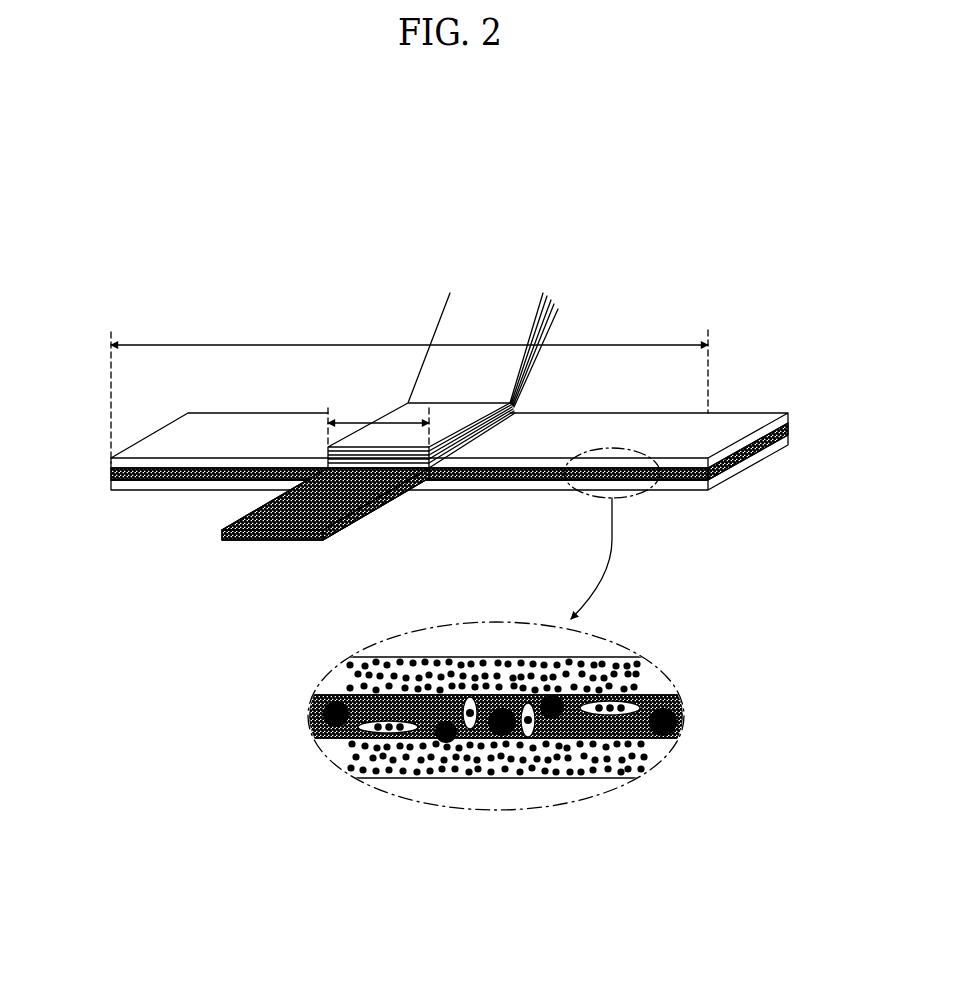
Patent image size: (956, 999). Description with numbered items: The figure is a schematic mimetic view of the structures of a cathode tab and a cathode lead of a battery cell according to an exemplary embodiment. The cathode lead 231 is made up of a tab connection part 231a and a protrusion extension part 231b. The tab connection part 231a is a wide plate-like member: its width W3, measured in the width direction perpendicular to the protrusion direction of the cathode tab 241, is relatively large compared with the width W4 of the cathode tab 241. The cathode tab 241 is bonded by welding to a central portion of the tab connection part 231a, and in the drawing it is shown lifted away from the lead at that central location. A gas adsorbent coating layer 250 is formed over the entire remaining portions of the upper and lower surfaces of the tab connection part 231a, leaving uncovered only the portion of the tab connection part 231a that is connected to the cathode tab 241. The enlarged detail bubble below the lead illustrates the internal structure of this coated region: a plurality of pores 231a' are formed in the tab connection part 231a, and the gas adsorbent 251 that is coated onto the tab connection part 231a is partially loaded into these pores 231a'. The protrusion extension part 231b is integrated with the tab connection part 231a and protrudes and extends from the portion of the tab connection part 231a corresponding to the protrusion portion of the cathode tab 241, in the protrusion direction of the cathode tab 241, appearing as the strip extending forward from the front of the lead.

The gas adsorbent coating layer 250 is at (738, 420).
The cathode lead 231 is at (435, 535).
The tab connection part 231a is at (435, 513).
The protrusion extension part 231b is at (255, 542).
The cathode tab 241 is at (427, 309).
The gas adsorbent 251 is at (347, 673).
The pores 231a' is at (456, 722).
The width of tab connection part W3 is at (613, 345).
The width of cathode tab W4 is at (382, 423).